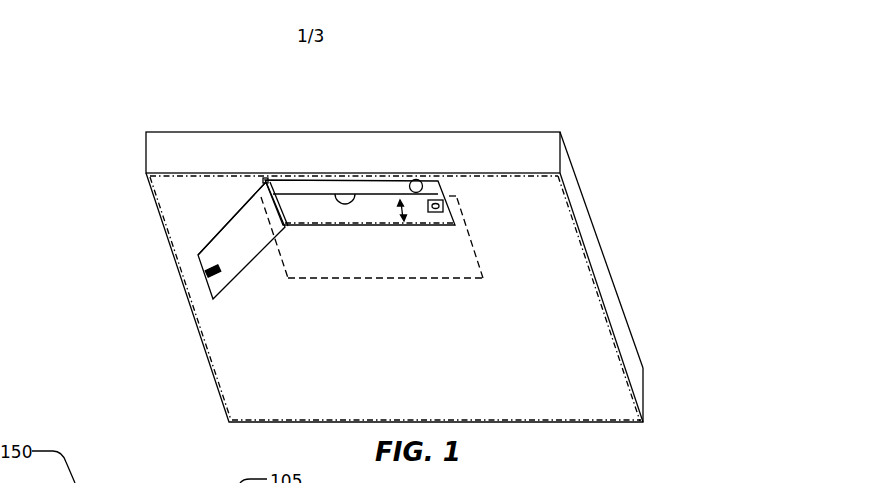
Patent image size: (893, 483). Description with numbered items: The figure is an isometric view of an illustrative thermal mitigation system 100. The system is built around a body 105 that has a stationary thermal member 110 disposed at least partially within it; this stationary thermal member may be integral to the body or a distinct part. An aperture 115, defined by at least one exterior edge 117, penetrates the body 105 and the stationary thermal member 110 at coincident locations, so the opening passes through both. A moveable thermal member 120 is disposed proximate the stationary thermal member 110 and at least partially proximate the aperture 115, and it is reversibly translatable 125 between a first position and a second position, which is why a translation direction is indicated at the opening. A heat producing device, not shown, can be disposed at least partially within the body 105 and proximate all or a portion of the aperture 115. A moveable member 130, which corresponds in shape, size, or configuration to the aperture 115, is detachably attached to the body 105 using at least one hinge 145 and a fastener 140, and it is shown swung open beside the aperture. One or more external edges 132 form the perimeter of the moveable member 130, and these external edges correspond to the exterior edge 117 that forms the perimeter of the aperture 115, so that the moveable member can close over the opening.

The thermal mitigation system 100 is at (618, 44).
The body 105 is at (457, 132).
The stationary thermal member 110 is at (579, 238).
The aperture 115 is at (347, 190).
The exterior edge 117 is at (422, 182).
The moveable thermal member 120 is at (482, 262).
The reversible translation 125 is at (400, 201).
The moveable member 130 is at (251, 238).
The external edges 132 is at (210, 242).
The fastener 140 is at (204, 276).
The hinge 145 is at (265, 180).